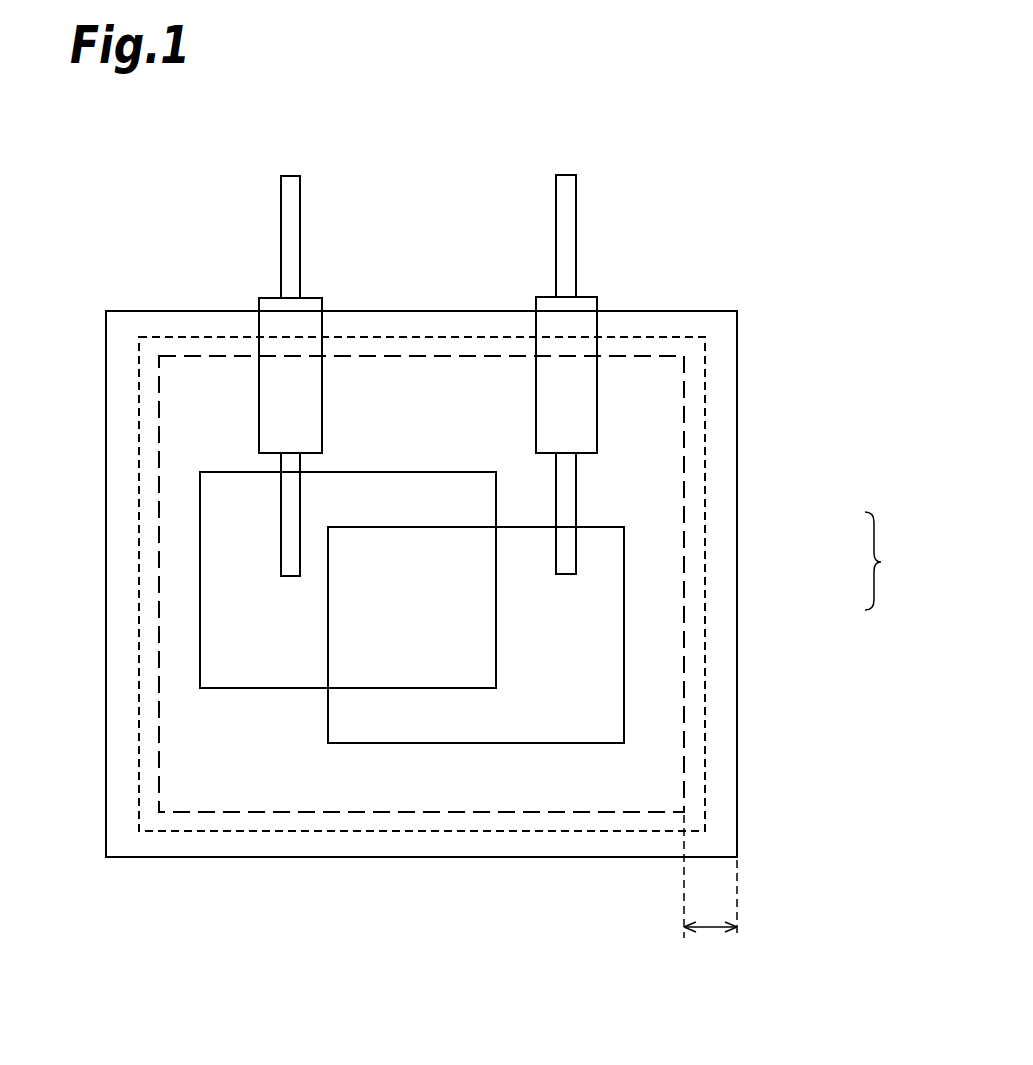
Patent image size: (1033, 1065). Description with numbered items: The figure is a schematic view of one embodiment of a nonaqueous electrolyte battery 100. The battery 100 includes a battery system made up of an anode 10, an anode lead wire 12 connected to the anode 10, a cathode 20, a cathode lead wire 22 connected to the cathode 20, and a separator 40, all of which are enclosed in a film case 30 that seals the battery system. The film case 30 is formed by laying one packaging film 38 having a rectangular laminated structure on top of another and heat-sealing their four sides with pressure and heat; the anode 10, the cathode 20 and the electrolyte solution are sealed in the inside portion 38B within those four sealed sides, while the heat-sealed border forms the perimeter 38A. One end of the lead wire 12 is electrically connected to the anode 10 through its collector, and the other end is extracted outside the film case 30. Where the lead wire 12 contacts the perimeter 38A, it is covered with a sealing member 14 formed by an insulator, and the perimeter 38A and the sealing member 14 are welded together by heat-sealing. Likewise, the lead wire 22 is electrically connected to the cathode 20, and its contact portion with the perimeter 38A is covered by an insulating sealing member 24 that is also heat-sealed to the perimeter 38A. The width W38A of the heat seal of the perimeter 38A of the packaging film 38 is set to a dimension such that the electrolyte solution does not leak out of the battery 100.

The nonaqueous electrolyte battery 100 is at (715, 140).
The anode 10 is at (200, 620).
The anode lead wire 12 is at (281, 223).
The sealing member 14 is at (259, 323).
The cathode 20 is at (624, 715).
The cathode lead wire 22 is at (577, 222).
The sealing member 24 is at (597, 322).
The film case 30 is at (738, 397).
The packaging film 38 is at (894, 561).
The perimeter 38A is at (721, 506).
The inside portion 38B is at (668, 577).
The separator 40 is at (288, 832).
The width of the heat seal W38A is at (710, 927).